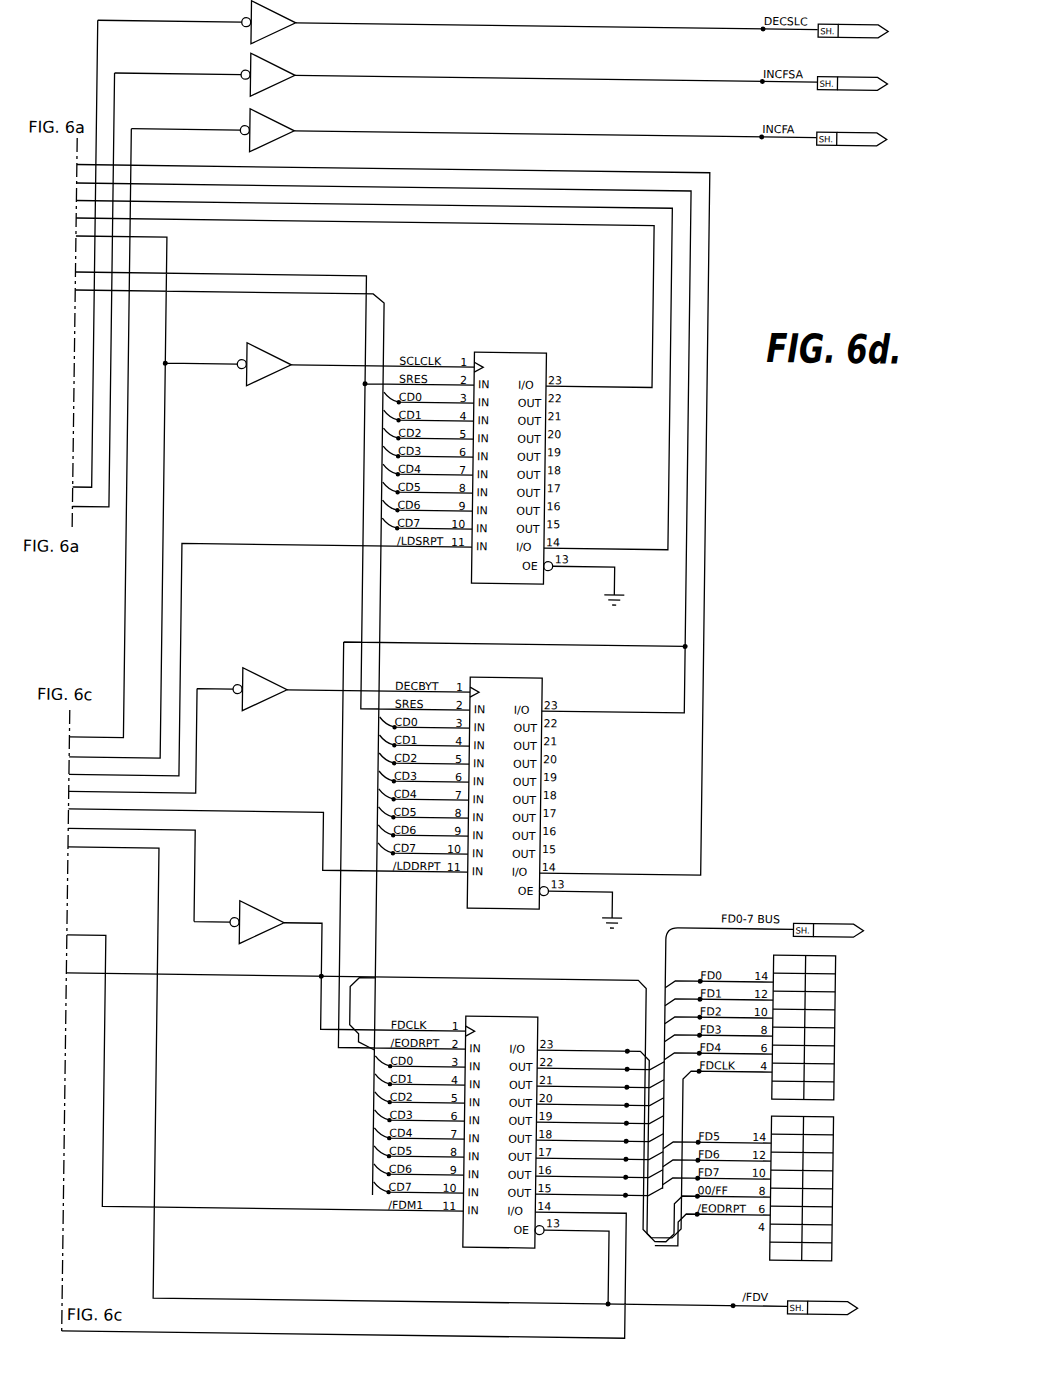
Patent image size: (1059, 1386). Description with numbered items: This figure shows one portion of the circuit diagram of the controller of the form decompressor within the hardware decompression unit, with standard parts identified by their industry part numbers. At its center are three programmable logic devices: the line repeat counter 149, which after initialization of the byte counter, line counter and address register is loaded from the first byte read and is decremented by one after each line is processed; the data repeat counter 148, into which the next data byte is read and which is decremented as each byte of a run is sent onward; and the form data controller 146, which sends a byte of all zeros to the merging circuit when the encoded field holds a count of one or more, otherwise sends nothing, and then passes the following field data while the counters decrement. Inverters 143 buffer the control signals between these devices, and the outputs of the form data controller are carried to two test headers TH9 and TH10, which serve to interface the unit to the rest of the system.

The hex inverter U143 (74F04) 143 is at (283, 481).
The line repeat counter 149 is at (539, 478).
The data repeat counter 148 is at (536, 803).
The form data controller 146 is at (524, 1142).
The test head TH9 (NWIS lower) TH9 is at (845, 1028).
The test head TH10 (NWIS middle) TH10 is at (841, 1189).